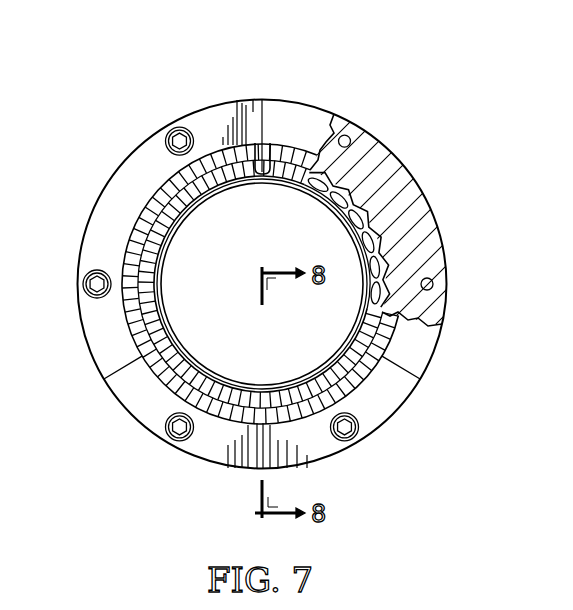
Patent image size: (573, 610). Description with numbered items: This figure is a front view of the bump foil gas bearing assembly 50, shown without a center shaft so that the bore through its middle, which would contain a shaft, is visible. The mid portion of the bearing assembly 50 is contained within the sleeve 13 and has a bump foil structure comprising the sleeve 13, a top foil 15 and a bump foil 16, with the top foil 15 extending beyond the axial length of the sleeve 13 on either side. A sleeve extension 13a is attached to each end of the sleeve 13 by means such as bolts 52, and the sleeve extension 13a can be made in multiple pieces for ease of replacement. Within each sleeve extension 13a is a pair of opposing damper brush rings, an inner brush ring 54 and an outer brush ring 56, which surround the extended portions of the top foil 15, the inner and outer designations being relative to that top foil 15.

The bump foil gas bearing assembly 50 is at (114, 70).
The sleeve 13 is at (367, 135).
The sleeve extension 13a is at (128, 158).
The top foil 15 is at (323, 177).
The bump foil 16 is at (368, 198).
The bolts 52 is at (168, 436).
The inner brush ring 54 is at (138, 262).
The outer brush ring 56 is at (125, 306).